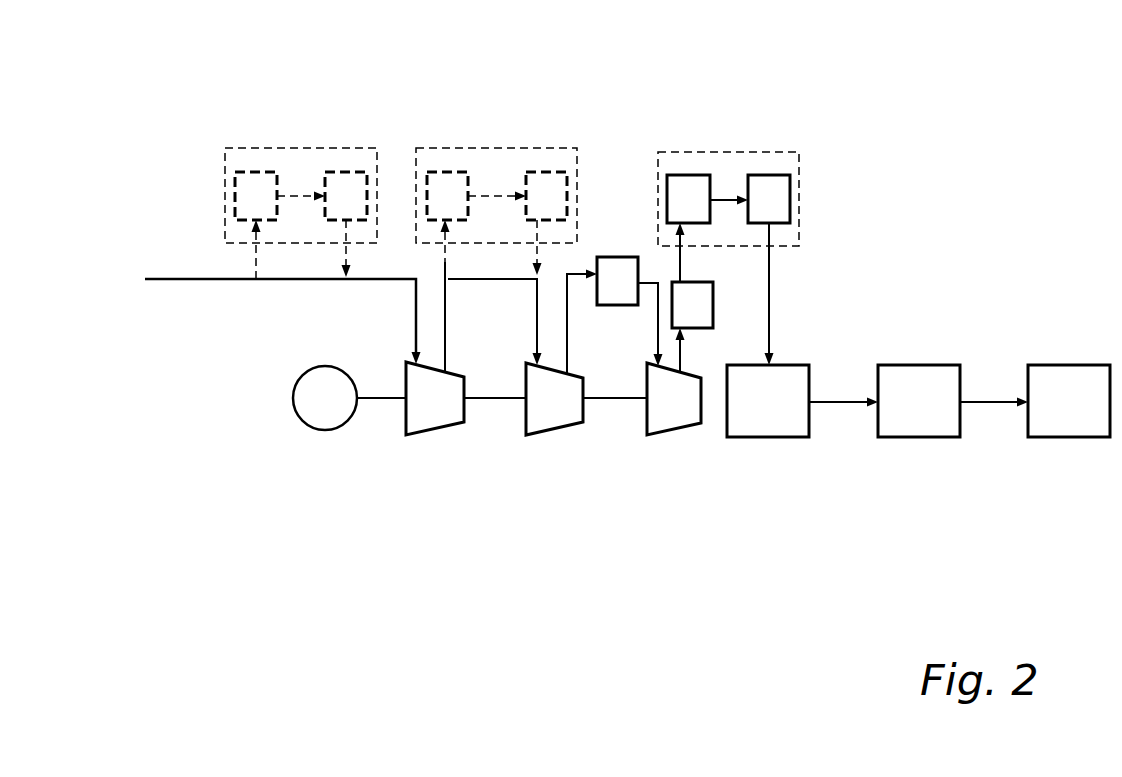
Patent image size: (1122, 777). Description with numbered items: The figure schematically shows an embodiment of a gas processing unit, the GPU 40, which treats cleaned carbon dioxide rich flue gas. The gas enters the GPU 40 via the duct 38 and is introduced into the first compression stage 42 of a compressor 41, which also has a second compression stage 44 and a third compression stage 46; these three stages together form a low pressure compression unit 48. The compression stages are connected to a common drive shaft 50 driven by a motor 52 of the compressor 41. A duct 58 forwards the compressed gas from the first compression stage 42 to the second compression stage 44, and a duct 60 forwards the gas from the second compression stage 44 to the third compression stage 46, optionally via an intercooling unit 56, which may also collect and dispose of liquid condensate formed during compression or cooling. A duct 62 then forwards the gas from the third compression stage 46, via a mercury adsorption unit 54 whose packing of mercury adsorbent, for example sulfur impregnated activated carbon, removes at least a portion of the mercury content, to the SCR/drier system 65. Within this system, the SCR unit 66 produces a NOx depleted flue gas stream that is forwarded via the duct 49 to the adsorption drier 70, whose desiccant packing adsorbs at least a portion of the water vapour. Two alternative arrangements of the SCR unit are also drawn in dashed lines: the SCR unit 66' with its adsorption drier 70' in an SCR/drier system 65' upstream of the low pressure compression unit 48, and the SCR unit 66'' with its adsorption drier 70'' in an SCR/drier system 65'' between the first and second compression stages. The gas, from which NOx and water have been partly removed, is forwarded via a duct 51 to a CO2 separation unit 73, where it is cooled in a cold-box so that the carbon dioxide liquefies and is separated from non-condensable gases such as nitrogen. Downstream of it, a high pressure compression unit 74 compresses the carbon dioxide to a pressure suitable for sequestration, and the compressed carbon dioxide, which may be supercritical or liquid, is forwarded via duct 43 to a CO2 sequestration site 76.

The duct 38 is at (185, 283).
The GPU 40 is at (915, 189).
The compressor 41 is at (388, 398).
The first compression stage 42 is at (435, 428).
The duct 43 is at (979, 398).
The second compression stage 44 is at (553, 430).
The third compression stage 46 is at (673, 432).
The low pressure compression unit 48 is at (367, 470).
The duct 49 is at (716, 203).
The common drive shaft 50 is at (498, 402).
The duct 51 is at (768, 307).
The motor 52 is at (322, 433).
The mercury adsorption unit 54 is at (715, 305).
The intercooling unit 56 is at (620, 257).
The duct 58 is at (447, 305).
The duct 60 is at (570, 275).
The duct 62 is at (678, 260).
The SCR/drier system 65 is at (699, 169).
The SCR/drier system 65' is at (278, 158).
The SCR/drier system 65'' is at (475, 156).
The SCR unit 66 is at (655, 142).
The SCR unit 66' is at (228, 169).
The SCR unit 66'' is at (420, 161).
The adsorption drier 70 is at (748, 145).
The adsorption drier 70' is at (322, 173).
The adsorption drier 70'' is at (517, 172).
The CO2 separation unit 73 is at (766, 438).
The high pressure compression unit 74 is at (917, 438).
The CO2 sequestration site 76 is at (1067, 442).